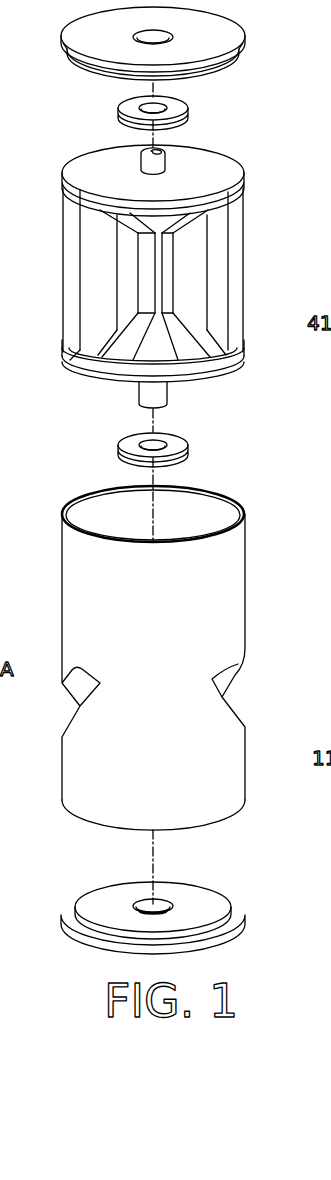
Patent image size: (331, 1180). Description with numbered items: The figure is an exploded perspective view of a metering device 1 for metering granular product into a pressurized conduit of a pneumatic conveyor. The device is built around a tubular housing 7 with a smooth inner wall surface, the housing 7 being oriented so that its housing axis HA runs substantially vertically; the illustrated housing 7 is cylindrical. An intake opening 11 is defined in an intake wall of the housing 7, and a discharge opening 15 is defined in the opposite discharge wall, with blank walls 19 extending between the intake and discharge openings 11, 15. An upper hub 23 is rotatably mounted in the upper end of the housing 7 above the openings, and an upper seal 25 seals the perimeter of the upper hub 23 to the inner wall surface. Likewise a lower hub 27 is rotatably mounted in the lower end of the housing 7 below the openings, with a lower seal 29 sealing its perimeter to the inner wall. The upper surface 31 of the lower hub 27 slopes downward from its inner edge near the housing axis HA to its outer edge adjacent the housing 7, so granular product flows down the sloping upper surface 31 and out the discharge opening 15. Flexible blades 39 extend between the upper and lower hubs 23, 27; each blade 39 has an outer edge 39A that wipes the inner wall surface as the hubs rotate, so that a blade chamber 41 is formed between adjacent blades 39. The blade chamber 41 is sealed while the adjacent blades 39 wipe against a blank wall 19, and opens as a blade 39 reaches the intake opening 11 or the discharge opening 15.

The metering device 1 is at (266, 111).
The tubular housing 7 is at (160, 672).
The intake opening 11 is at (233, 693).
The discharge opening 15 is at (72, 703).
The blank walls 19 is at (100, 810).
The upper hub 23 is at (245, 176).
The upper seal 25 is at (245, 192).
The lower hub 27 is at (200, 374).
The lower seal 29 is at (244, 350).
The upper surface 31 is at (108, 342).
The flexible blades 39 is at (162, 276).
The outer edge 39A is at (243, 250).
The blade chamber 41 is at (225, 306).
The housing axis HA is at (153, 858).